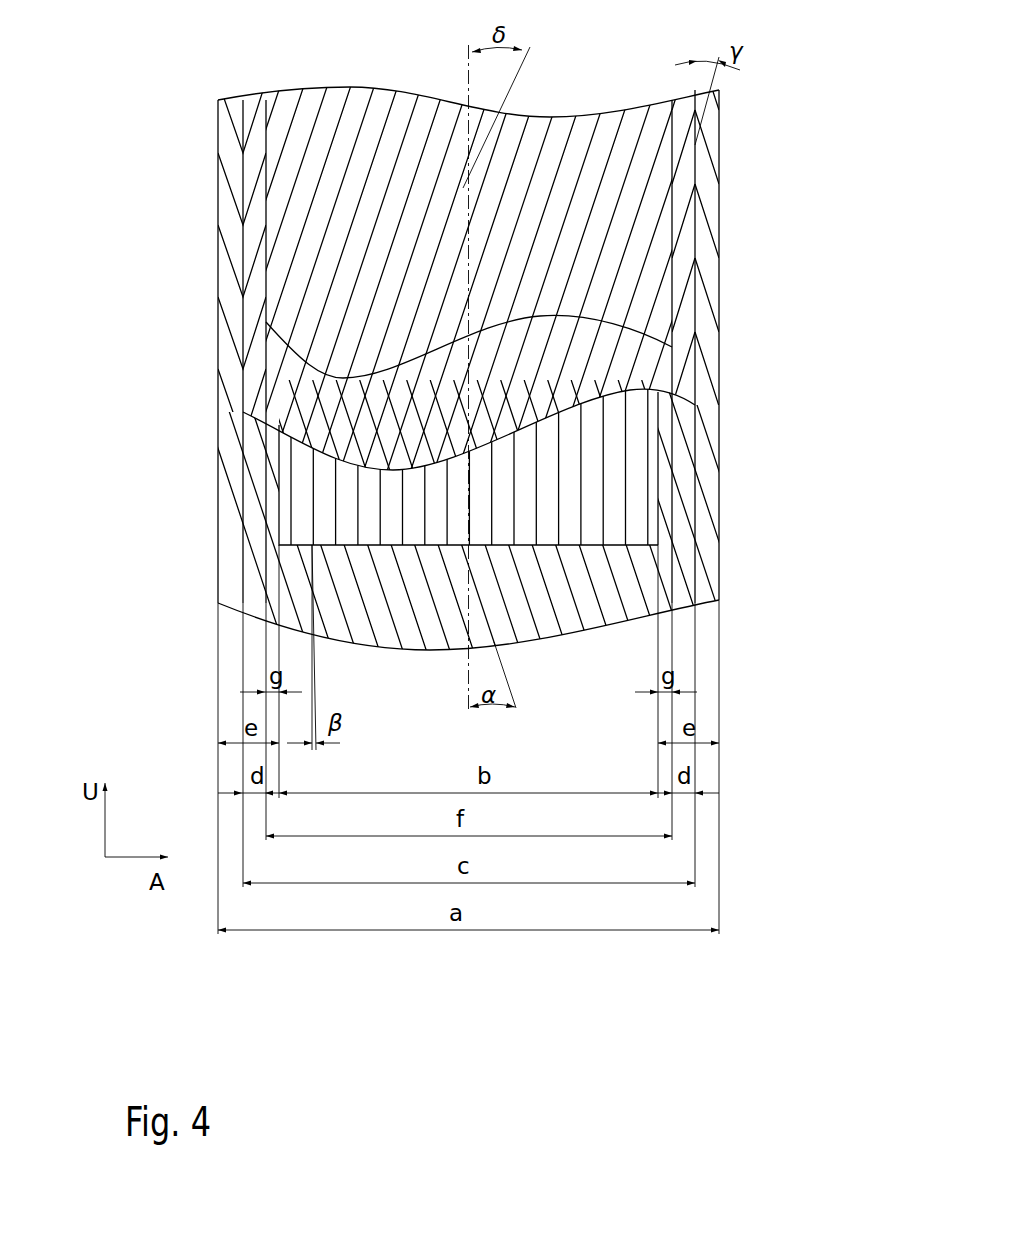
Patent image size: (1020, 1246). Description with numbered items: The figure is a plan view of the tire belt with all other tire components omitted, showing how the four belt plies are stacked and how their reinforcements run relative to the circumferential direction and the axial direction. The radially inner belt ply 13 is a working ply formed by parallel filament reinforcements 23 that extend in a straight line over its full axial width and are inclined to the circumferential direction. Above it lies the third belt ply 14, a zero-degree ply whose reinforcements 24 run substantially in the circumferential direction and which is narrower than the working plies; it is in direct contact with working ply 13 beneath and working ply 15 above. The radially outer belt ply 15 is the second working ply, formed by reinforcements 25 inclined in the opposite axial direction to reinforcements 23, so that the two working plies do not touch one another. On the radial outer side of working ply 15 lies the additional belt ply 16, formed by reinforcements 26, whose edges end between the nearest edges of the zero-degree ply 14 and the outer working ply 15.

The radially inner belt ply 13 is at (707, 328).
The third belt ply 14 is at (628, 497).
The radially outer belt ply 15 is at (680, 307).
The additional belt ply 16 is at (627, 207).
The reinforcements 23 is at (247, 543).
The rib region 24 is at (335, 510).
The reinforcements 25 is at (263, 291).
The reinforcements 26 is at (322, 173).